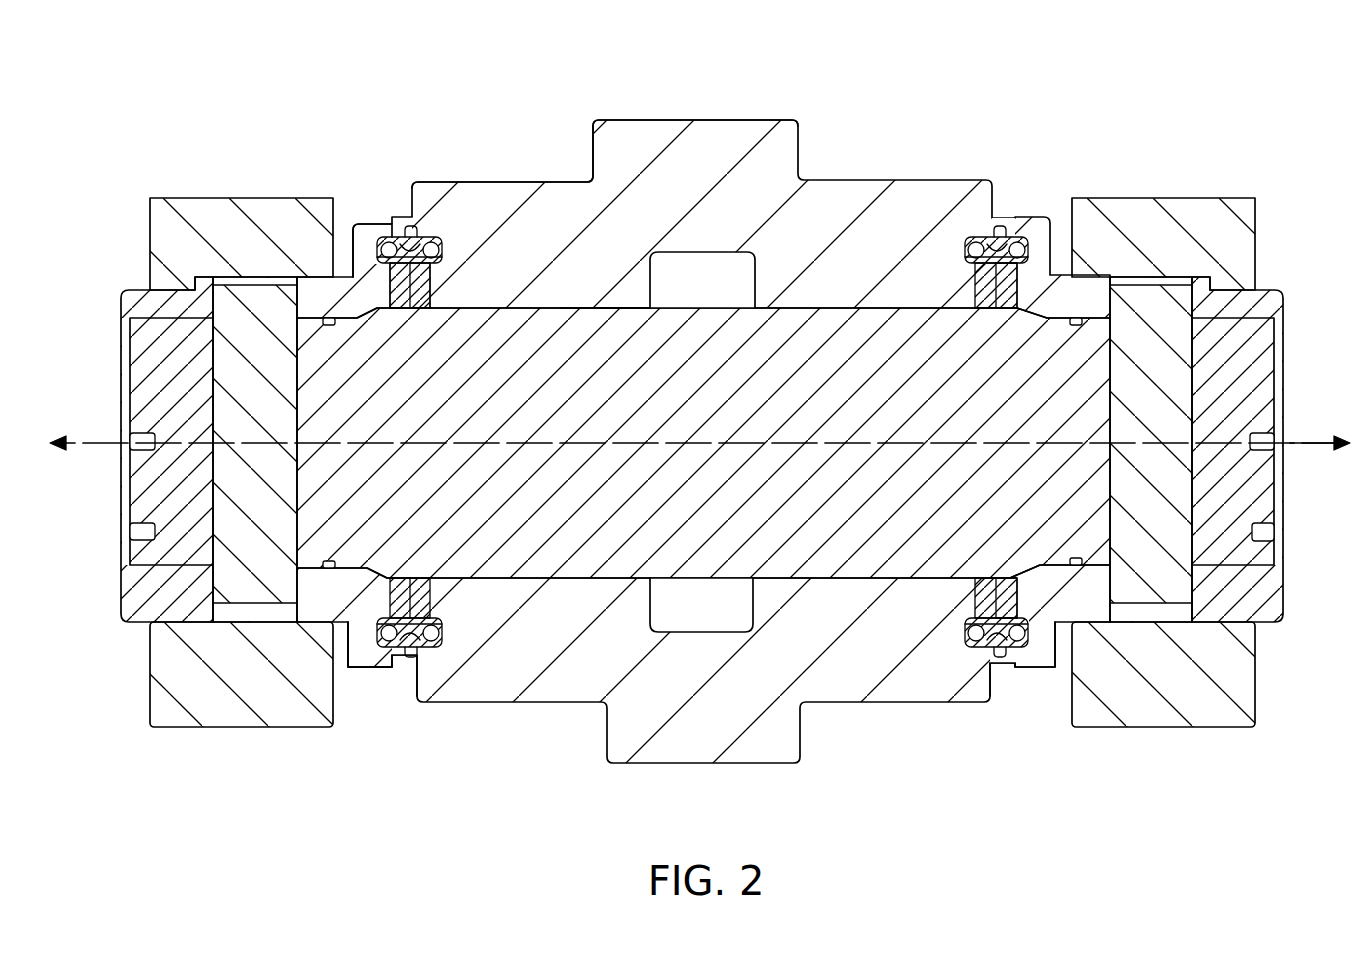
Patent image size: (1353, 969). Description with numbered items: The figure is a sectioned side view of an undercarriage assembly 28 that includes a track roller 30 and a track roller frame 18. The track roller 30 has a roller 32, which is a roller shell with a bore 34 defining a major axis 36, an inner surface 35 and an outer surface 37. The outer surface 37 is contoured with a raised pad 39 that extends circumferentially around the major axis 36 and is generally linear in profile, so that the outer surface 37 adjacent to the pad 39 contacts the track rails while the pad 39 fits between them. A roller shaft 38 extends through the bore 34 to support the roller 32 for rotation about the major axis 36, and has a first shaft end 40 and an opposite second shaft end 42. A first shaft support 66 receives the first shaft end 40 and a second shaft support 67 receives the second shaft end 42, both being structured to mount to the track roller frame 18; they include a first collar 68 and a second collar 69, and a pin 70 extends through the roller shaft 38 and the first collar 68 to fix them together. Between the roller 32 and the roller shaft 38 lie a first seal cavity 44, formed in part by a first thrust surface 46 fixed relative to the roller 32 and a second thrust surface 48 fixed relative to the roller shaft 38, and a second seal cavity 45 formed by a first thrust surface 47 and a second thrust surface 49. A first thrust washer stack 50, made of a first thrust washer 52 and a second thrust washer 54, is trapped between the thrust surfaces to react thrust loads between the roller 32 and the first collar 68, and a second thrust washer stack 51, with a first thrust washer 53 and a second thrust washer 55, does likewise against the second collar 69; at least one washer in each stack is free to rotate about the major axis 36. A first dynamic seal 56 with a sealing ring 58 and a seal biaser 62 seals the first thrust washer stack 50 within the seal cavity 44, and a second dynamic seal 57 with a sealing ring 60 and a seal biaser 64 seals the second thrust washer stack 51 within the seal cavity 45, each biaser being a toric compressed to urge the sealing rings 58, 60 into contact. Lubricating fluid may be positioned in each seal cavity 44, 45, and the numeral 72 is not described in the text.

The track roller frame 18 is at (1257, 210).
The undercarriage assembly 28 is at (1274, 112).
The track roller 30 is at (1002, 224).
The roller 32 is at (800, 138).
The bore 34 is at (800, 308).
The inner surface 35 is at (637, 316).
The major axis 36 is at (1290, 441).
The outer surface 37 is at (583, 176).
The roller shaft 38 is at (585, 306).
The pad 39 is at (700, 120).
The first shaft end 40 is at (135, 367).
The second shaft end 42 is at (1277, 355).
The first seal cavity 44 is at (405, 232).
The seal cavity 45 is at (1013, 600).
The first thrust surface 46 is at (432, 288).
The first thrust surface 47 is at (975, 285).
The second thrust surface 48 is at (390, 300).
The second thrust surface 49 is at (1012, 292).
The first thrust washer stack 50 is at (417, 307).
The second thrust washer stack 51 is at (982, 634).
The first thrust washer 52 is at (414, 310).
The first thrust washer 53 is at (1006, 578).
The second thrust washer 54 is at (397, 310).
The second thrust washer 55 is at (990, 578).
The first dynamic seal 56 is at (396, 214).
The second dynamic seal 57 is at (968, 655).
The sealing ring 58 is at (442, 257).
The sealing ring 60 is at (378, 250).
The seal biaser 62 is at (436, 238).
The seal biaser 64 is at (378, 240).
The first shaft support 66 is at (389, 673).
The second shaft support 67 is at (1042, 676).
The first collar 68 is at (364, 672).
The second collar 69 is at (1000, 658).
The pin 70 is at (245, 600).
The seal lip 72 is at (410, 660).